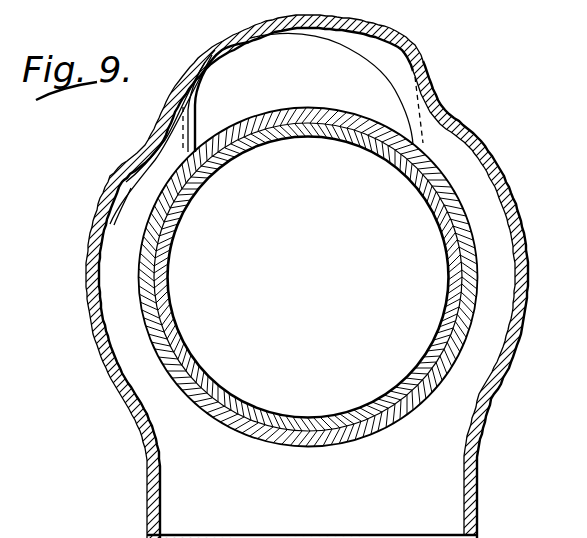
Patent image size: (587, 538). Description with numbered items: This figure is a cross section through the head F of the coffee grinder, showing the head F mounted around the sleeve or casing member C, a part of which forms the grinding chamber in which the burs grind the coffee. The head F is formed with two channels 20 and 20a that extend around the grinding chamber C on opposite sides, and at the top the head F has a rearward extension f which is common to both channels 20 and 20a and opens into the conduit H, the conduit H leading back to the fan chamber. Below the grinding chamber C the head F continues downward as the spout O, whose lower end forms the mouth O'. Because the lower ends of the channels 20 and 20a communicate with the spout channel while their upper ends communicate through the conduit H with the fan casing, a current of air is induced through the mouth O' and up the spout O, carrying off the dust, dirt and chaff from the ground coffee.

The head F is at (506, 171).
The spout O is at (323, 276).
The conduit H is at (390, 87).
The rearward extension f is at (373, 32).
The sleeve or casing member C is at (390, 427).
The channel 20 is at (503, 317).
The channel 20a is at (110, 290).
The mouth of the spout O' is at (312, 507).